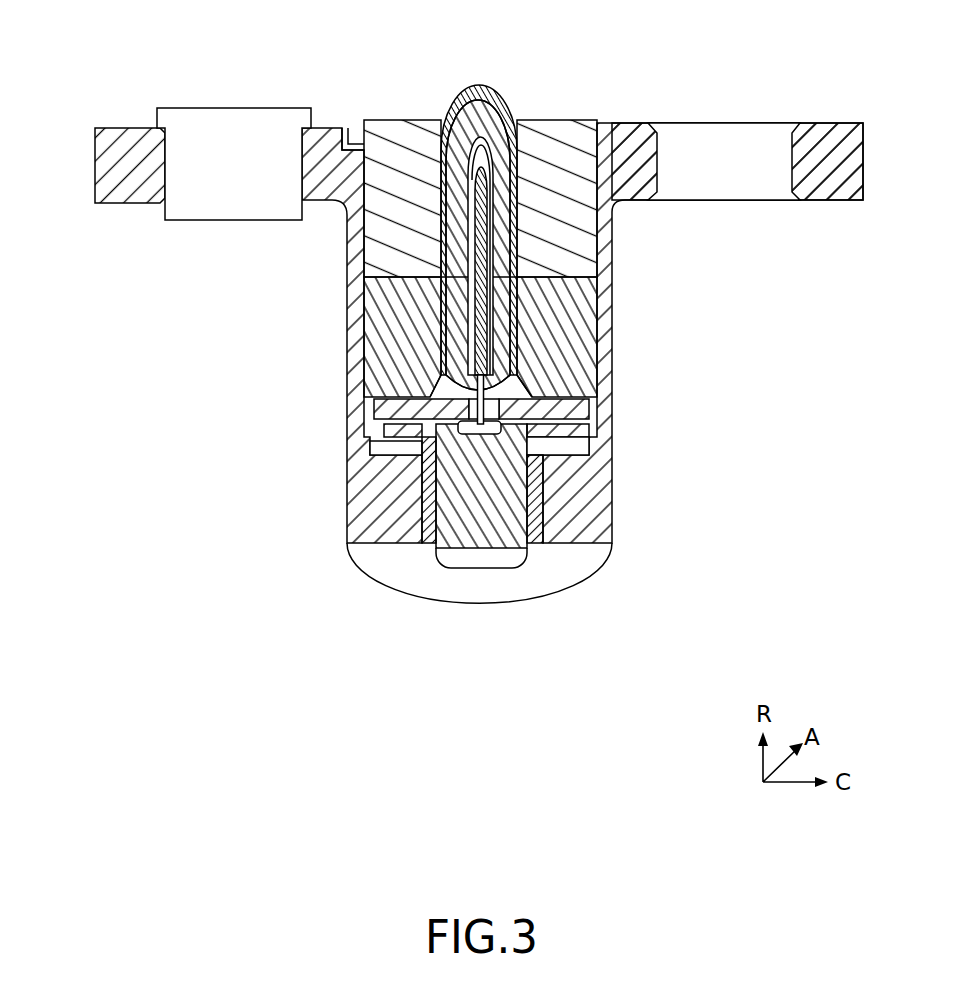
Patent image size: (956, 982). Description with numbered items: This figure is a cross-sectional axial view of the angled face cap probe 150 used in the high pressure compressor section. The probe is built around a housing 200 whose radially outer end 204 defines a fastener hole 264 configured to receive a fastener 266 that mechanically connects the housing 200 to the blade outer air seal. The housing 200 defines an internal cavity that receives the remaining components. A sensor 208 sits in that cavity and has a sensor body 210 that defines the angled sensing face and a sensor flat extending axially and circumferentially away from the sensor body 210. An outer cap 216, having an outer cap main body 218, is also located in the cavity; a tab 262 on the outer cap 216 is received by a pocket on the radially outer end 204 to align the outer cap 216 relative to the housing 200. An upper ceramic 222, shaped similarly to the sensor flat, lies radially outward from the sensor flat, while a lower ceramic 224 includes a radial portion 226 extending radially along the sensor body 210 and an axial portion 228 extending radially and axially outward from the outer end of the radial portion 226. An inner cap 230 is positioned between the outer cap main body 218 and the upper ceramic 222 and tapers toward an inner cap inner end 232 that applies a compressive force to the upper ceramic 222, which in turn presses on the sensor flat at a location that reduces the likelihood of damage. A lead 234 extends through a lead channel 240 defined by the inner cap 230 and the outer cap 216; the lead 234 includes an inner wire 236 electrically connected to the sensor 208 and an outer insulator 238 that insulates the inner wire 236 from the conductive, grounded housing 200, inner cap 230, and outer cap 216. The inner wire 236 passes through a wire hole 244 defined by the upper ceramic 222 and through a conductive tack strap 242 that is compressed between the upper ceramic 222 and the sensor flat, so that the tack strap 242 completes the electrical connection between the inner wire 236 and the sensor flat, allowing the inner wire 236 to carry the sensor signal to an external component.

The angled face cap probe 150 is at (688, 553).
The housing 200 is at (747, 200).
The radially outer end 204 is at (740, 123).
The sensor 208 is at (510, 533).
The sensor body 210 is at (507, 492).
The outer cap 216 is at (545, 145).
The outer cap main body 218 is at (393, 143).
The upper ceramic 222 is at (383, 408).
The lower ceramic 224 is at (427, 540).
The radial portion 226 is at (533, 523).
The axial portion 228 is at (540, 447).
The inner cap 230 is at (380, 363).
The inner cap inner end 232 is at (420, 398).
The lead 234 is at (455, 106).
The inner wire 236 is at (483, 212).
The outer insulator 238 is at (481, 87).
The lead channel 240 is at (440, 274).
The tack strap 242 is at (395, 423).
The wire hole 244 is at (492, 408).
The tab 262 is at (348, 127).
The fastener hole 264 is at (185, 160).
The fastener 266 is at (227, 220).